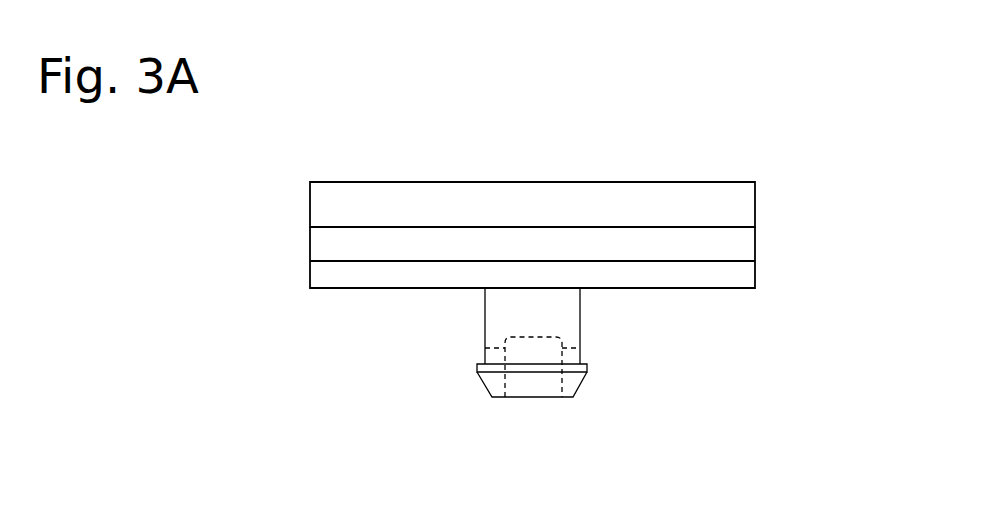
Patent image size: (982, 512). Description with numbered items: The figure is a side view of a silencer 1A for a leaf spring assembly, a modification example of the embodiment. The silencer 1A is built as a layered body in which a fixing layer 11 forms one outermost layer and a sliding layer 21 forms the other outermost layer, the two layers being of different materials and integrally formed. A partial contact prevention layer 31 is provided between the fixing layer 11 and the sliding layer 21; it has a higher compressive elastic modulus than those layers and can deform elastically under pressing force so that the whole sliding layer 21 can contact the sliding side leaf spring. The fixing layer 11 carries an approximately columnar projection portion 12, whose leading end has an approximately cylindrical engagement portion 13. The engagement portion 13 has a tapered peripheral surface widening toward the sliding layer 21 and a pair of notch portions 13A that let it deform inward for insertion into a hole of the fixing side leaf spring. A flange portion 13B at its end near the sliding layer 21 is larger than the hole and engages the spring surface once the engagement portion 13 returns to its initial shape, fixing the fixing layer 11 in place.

The silencer 1A is at (554, 292).
The sliding layer 21 is at (328, 205).
The partial contact prevention layer 31 is at (740, 245).
The fixing layer 11 is at (328, 275).
The projection portion 12 is at (565, 318).
The engagement portion 13 is at (542, 393).
The notch portions 13A is at (570, 382).
The flange portion 13B is at (588, 368).